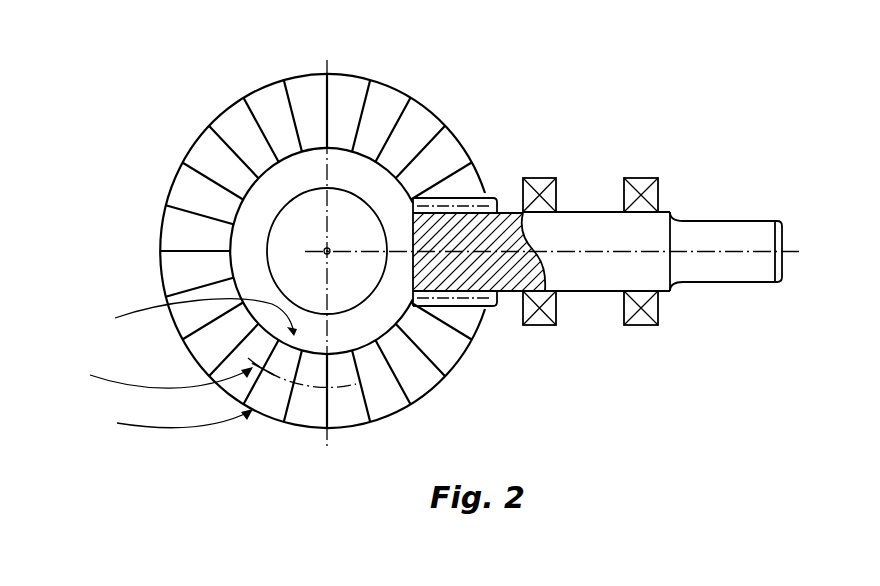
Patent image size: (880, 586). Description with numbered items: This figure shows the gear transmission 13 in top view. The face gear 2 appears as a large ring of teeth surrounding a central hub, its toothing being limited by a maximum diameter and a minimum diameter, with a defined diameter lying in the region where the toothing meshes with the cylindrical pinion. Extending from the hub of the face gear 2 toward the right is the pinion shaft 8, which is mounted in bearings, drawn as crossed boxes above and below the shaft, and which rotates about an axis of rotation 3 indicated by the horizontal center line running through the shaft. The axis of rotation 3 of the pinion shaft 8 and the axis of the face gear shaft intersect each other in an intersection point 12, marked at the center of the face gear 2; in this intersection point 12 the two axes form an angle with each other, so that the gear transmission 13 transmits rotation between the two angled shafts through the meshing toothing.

The face gear 2 is at (437, 158).
The intersection point 12 is at (327, 251).
The gear transmission 13 is at (487, 111).
The pinion shaft 8 is at (574, 235).
The axis of rotation 3 is at (723, 250).